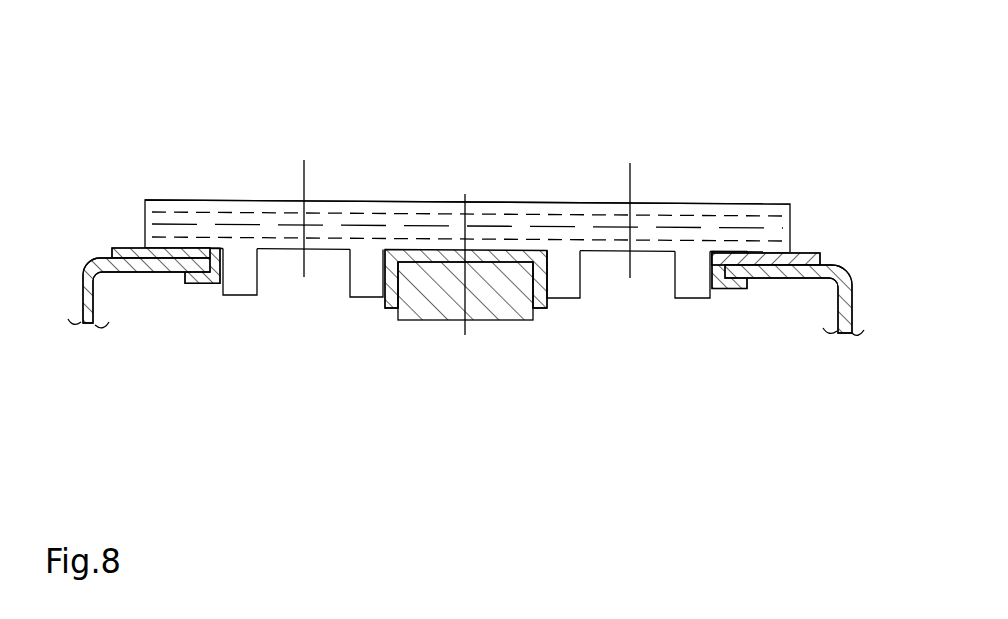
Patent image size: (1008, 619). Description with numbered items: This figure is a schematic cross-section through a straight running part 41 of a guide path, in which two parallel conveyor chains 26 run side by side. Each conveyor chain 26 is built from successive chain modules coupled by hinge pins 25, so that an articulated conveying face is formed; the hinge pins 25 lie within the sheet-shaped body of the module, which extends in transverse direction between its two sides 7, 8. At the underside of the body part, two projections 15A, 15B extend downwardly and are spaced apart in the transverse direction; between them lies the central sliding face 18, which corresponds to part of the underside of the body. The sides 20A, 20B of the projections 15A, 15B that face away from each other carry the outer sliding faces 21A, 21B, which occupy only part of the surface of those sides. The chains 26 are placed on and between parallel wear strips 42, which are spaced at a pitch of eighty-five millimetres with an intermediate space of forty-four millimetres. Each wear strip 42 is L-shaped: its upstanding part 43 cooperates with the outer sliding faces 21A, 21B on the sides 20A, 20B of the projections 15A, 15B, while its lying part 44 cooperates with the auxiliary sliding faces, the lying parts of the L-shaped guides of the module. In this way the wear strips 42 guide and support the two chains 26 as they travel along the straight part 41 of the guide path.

The side of the body part 7 is at (467, 213).
The side of the body part 8 is at (145, 200).
The projection 15A is at (367, 272).
The projection 15B is at (242, 280).
The central sliding face 18 is at (286, 249).
The side facing away of the projection 20A is at (585, 375).
The side facing away of the projection 20B is at (345, 374).
The outer sliding face 21A is at (388, 302).
The outer sliding face 21B is at (221, 262).
The hinge pin 25 is at (350, 222).
The conveyor chain 26 is at (665, 93).
The straight running part of guide path 41 is at (473, 264).
The wear strip 42 is at (200, 250).
The upstanding part of the wear strip 43 is at (222, 258).
The lying part of the wear strip 44 is at (172, 247).